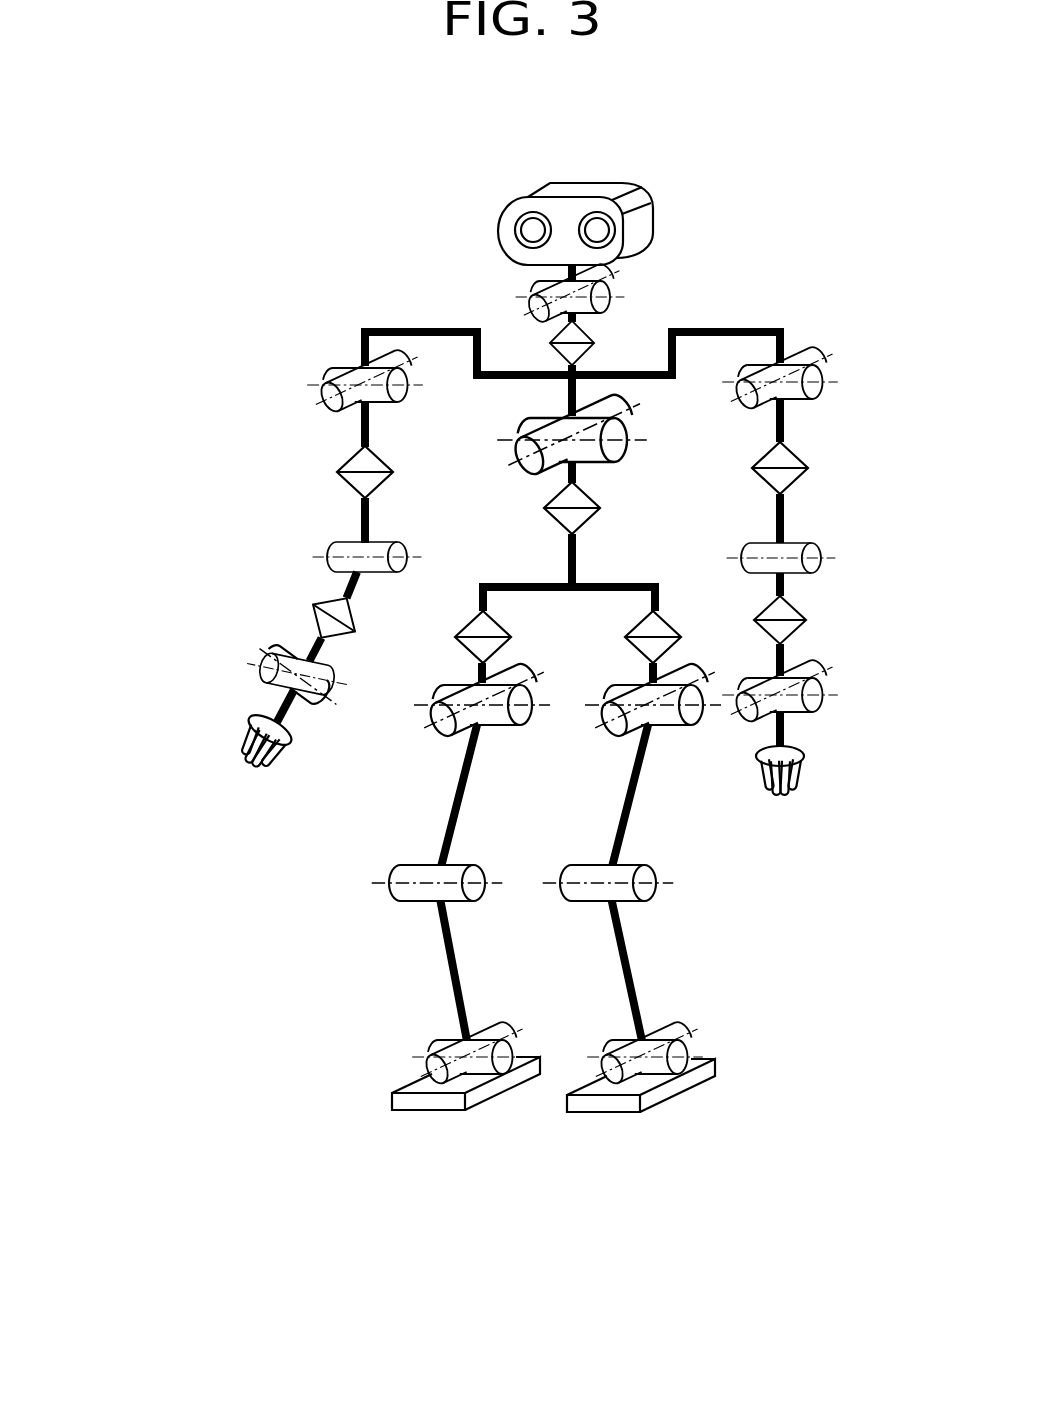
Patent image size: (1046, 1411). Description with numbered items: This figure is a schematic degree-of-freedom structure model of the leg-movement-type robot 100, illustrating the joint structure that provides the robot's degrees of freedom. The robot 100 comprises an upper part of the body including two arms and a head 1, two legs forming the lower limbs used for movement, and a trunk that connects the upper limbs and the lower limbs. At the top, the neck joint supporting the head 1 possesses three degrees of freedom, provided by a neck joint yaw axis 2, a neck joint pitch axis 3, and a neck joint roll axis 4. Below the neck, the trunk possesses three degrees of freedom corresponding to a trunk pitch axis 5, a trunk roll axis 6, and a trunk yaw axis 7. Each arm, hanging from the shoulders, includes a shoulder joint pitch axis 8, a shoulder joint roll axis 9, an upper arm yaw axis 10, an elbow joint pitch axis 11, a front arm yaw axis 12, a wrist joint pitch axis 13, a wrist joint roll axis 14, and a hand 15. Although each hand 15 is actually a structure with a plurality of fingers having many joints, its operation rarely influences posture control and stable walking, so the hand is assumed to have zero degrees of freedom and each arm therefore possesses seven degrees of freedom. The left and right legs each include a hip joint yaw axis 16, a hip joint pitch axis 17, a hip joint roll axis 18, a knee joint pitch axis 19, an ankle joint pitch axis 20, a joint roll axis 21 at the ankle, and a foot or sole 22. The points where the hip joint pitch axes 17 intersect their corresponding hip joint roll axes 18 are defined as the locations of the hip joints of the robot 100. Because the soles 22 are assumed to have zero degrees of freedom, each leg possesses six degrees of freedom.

The head 1 is at (620, 195).
The neck joint yaw axis 2 is at (593, 348).
The neck joint pitch axis 3 is at (608, 310).
The neck joint roll axis 4 is at (600, 273).
The trunk pitch axis 5 is at (620, 457).
The trunk roll axis 6 is at (613, 418).
The trunk yaw axis 7 is at (602, 503).
The shoulder joint pitch axis 8 is at (318, 375).
The shoulder joint roll axis 9 is at (332, 410).
The upper arm yaw axis 10 is at (345, 458).
The elbow joint pitch axis 11 is at (345, 545).
The front arm yaw axis 12 is at (313, 625).
The wrist joint pitch axis 13 is at (272, 650).
The wrist joint roll axis 14 is at (258, 672).
The hand 15 is at (242, 728).
The hip joint yaw axis 16 is at (675, 623).
The hip joint pitch axis 17 is at (693, 712).
The hip joint roll axis 18 is at (608, 735).
The knee joint pitch axis 19 is at (655, 892).
The ankle joint pitch axis 20 is at (685, 1068).
The joint roll axis 21 is at (673, 1032).
The foot 22 is at (633, 1088).
The leg-movement-type robot 100 is at (362, 1147).